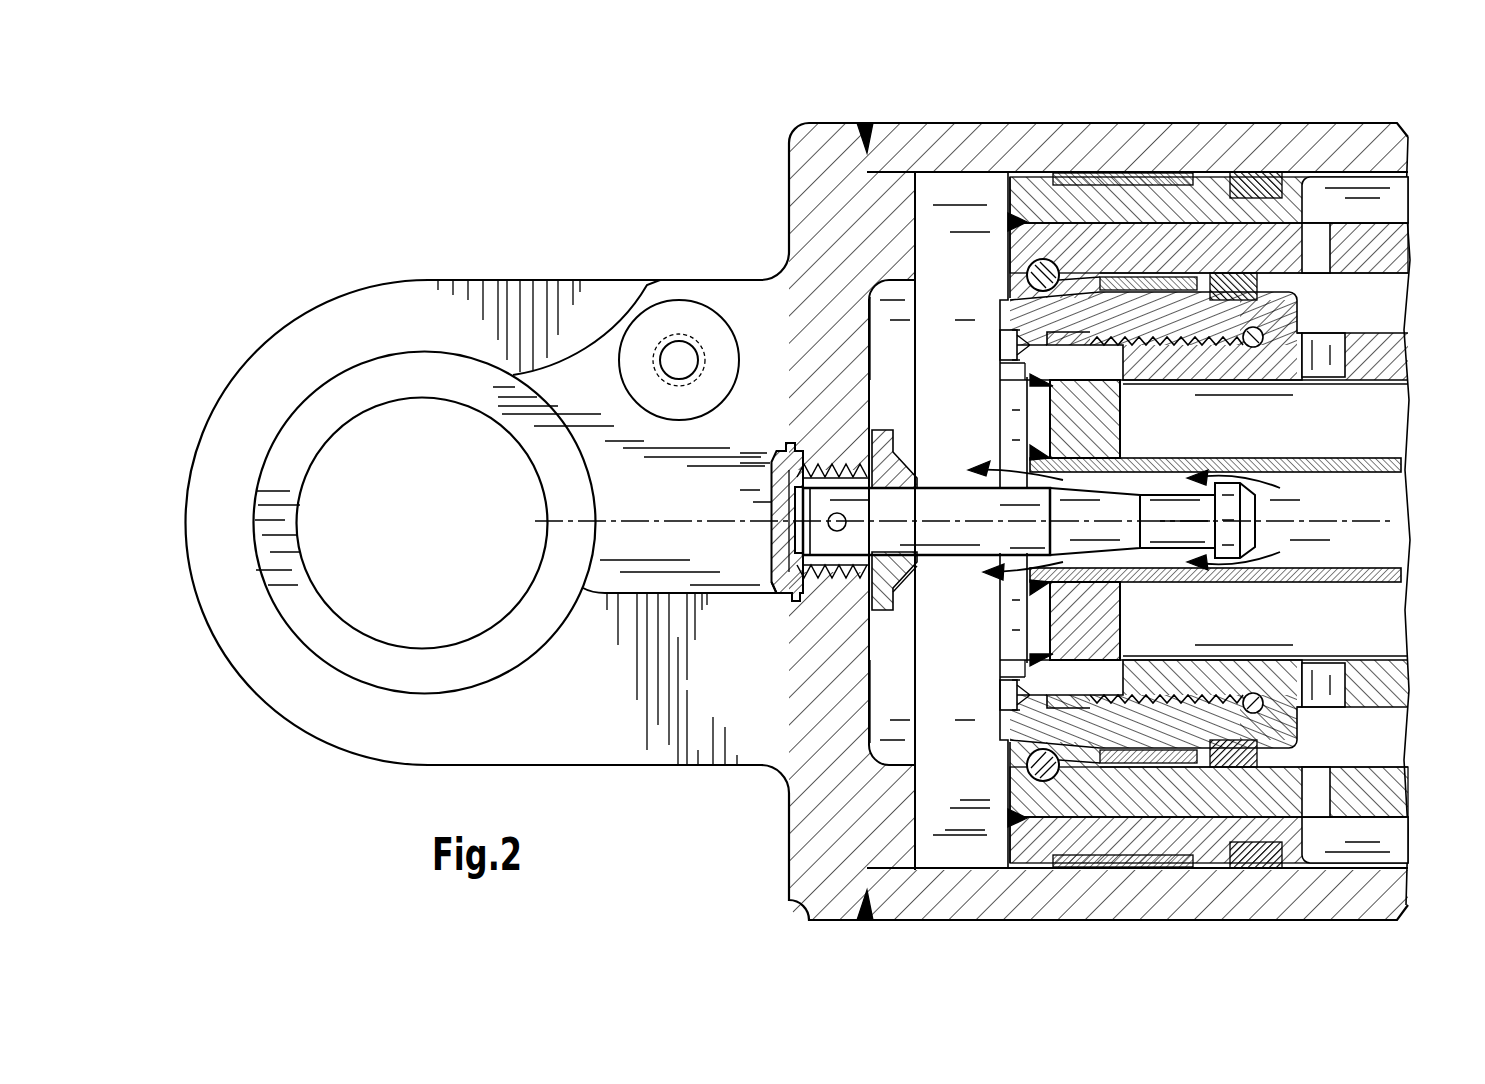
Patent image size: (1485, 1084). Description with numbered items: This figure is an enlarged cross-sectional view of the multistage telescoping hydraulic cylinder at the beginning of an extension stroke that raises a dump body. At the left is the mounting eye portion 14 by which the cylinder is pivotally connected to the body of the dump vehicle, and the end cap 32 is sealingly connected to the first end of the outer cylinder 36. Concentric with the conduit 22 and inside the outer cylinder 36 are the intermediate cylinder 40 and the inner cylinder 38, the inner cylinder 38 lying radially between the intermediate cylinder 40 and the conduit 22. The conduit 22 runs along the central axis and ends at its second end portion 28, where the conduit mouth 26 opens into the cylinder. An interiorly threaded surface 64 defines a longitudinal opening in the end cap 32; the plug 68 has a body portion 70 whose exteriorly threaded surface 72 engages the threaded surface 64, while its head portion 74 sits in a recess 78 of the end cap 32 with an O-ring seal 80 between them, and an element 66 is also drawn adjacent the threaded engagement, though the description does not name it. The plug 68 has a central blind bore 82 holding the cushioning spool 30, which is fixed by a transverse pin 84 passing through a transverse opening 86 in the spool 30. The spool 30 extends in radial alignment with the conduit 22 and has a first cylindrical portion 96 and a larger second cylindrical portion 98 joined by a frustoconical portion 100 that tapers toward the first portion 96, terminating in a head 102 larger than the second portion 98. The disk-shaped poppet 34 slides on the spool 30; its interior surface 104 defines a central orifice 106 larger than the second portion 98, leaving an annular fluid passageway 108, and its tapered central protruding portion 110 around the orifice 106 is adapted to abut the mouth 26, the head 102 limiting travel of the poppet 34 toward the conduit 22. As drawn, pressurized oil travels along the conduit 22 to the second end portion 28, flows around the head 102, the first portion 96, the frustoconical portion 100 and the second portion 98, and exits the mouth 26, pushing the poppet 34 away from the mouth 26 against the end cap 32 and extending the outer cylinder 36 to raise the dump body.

The mounting eye portion 14 is at (366, 318).
The fluid transfer structure or conduit 22 is at (1382, 466).
The conduit mouth 26 is at (1033, 450).
The second end portion 28 is at (1370, 545).
The cushioning spool 30 is at (1105, 496).
The end cap 32 is at (825, 180).
The poppet 34 is at (888, 602).
The outer cylinder 36 is at (1030, 135).
The inner cylinder 38 is at (1360, 357).
The intermediate cylinder 40 is at (1335, 247).
The interiorly threaded surface 64 is at (827, 468).
The thread insert 66 is at (880, 433).
The plug 68 is at (782, 574).
The body portion 70 is at (800, 640).
The exteriorly threaded surface 72 is at (870, 660).
The head portion 74 is at (783, 470).
The recess 78 is at (791, 442).
The O-ring seal 80 is at (815, 585).
The central blind bore 82 is at (804, 500).
The transverse pin 84 is at (828, 524).
The transverse opening 86 is at (808, 547).
The first cylindrical portion 96 is at (1165, 505).
The second cylindrical portion 98 is at (953, 540).
The frustoconical portion 100 is at (1110, 503).
The head 102 is at (1235, 507).
The interior surface 104 is at (897, 488).
The central orifice 106 is at (918, 480).
The annular fluid passageway 108 is at (925, 562).
The tapered central protruding portion 110 is at (905, 570).